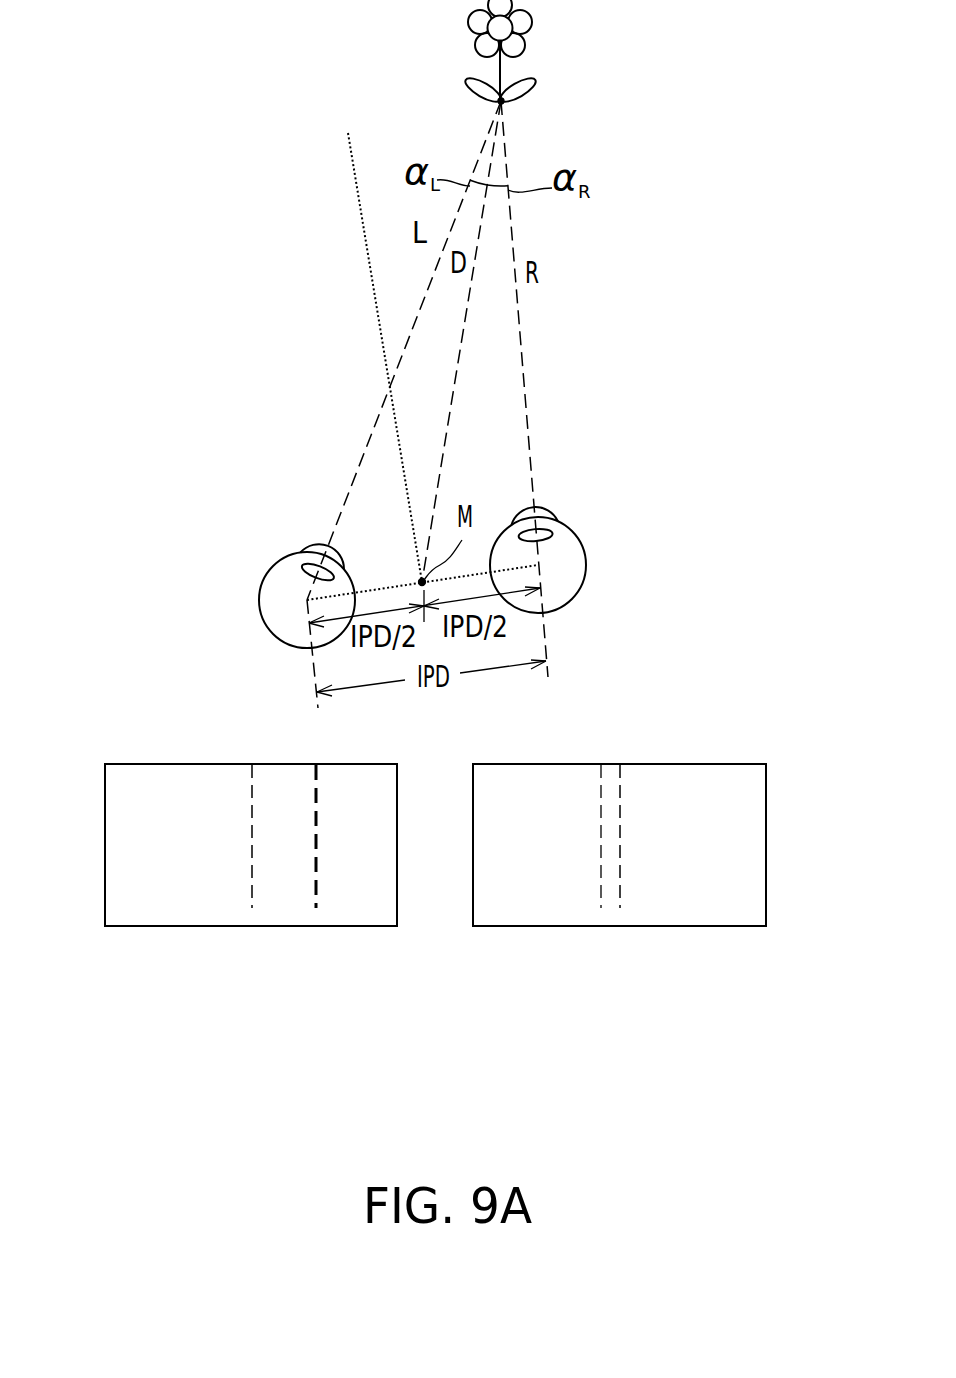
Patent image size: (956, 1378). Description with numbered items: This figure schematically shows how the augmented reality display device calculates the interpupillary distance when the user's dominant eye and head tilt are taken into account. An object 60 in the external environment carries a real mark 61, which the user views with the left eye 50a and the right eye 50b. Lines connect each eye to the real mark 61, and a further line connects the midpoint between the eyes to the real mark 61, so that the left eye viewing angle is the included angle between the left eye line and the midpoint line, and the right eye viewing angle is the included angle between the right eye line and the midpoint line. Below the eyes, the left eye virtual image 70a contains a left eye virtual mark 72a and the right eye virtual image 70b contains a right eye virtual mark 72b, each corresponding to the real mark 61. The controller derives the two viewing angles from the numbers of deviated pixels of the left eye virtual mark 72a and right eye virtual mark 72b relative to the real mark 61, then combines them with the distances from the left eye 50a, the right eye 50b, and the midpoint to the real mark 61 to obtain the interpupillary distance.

The object (flower) 60 is at (523, 24).
The real mark 61 is at (504, 103).
The left eye 50a is at (278, 602).
The right eye 50b is at (563, 573).
The left eye virtual image 70a is at (160, 764).
The right eye virtual image 70b is at (723, 764).
The left eye virtual mark 72a is at (317, 862).
The right eye virtual mark 72b is at (600, 862).